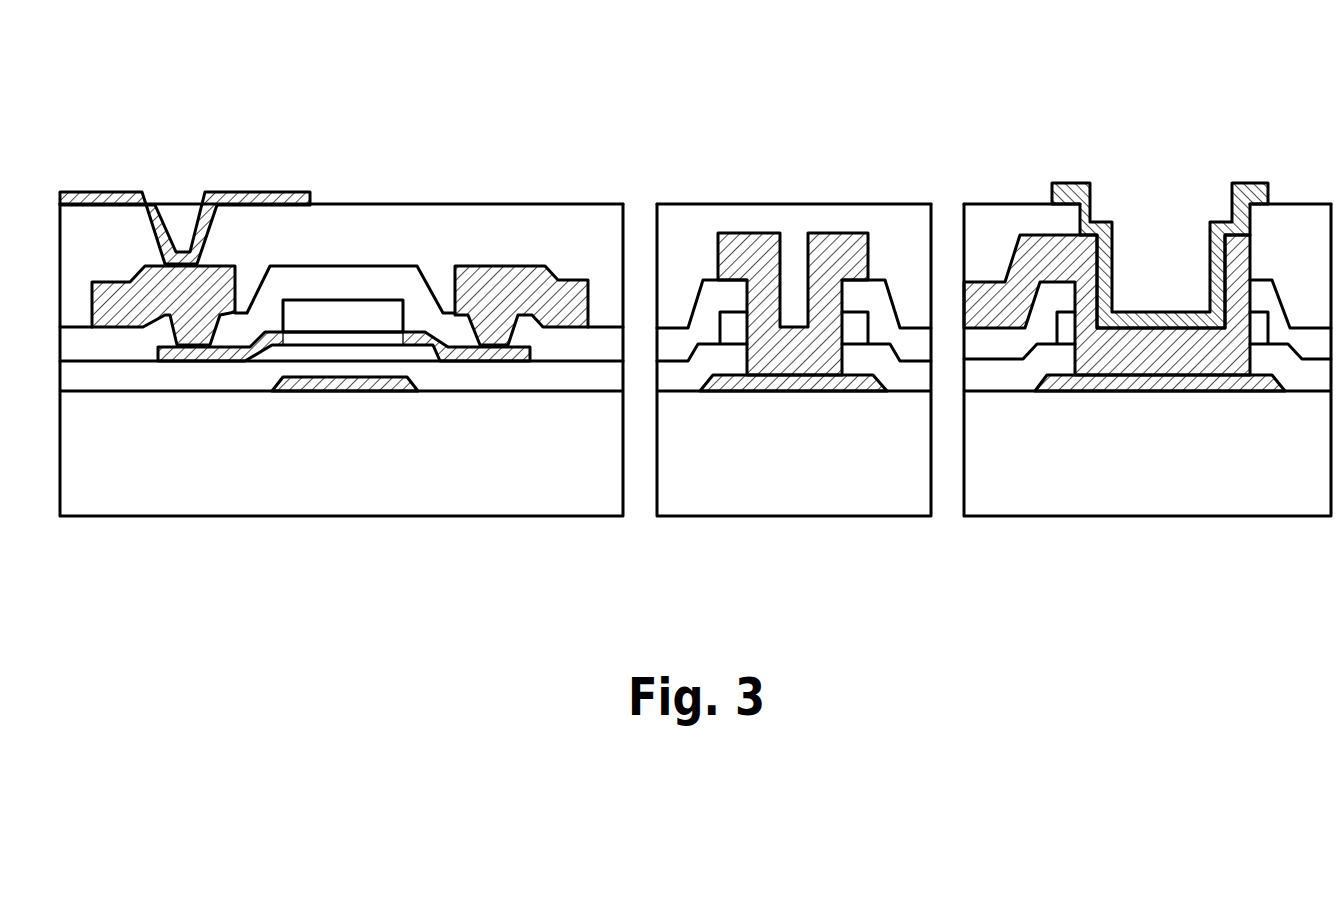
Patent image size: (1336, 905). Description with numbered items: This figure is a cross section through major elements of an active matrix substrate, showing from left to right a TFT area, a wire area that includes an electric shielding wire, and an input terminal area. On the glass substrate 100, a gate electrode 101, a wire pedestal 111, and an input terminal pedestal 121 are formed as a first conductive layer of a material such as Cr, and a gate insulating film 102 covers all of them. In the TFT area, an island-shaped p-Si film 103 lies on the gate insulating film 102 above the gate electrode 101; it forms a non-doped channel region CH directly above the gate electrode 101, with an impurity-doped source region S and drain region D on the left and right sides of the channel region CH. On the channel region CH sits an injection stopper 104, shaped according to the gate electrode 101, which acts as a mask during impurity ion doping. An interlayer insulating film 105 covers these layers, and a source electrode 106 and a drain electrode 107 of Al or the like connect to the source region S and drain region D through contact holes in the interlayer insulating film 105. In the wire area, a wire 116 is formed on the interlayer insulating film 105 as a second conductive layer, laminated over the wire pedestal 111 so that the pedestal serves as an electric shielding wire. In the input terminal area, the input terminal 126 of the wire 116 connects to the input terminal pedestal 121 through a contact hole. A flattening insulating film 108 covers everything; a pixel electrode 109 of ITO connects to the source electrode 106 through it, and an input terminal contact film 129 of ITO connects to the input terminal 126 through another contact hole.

The glass substrate 100 is at (113, 508).
The gate electrode 101 is at (345, 386).
The gate insulating film 102 is at (221, 386).
The p-Si film 103 is at (497, 362).
The injection stopper 104 is at (363, 312).
The interlayer insulating film 105 is at (400, 280).
The source electrode 106 is at (132, 280).
The drain electrode 107 is at (558, 266).
The flattening insulating film 108 is at (345, 222).
The pixel electrode 109 is at (243, 192).
The wire pedestal 111 is at (806, 383).
The wire 116 is at (862, 233).
The input terminal pedestal 121 is at (1146, 384).
The input terminal 126 is at (1268, 234).
The input terminal contact film 129 is at (1222, 232).
The source region S is at (198, 362).
The channel region CH is at (300, 340).
The drain region D is at (460, 361).